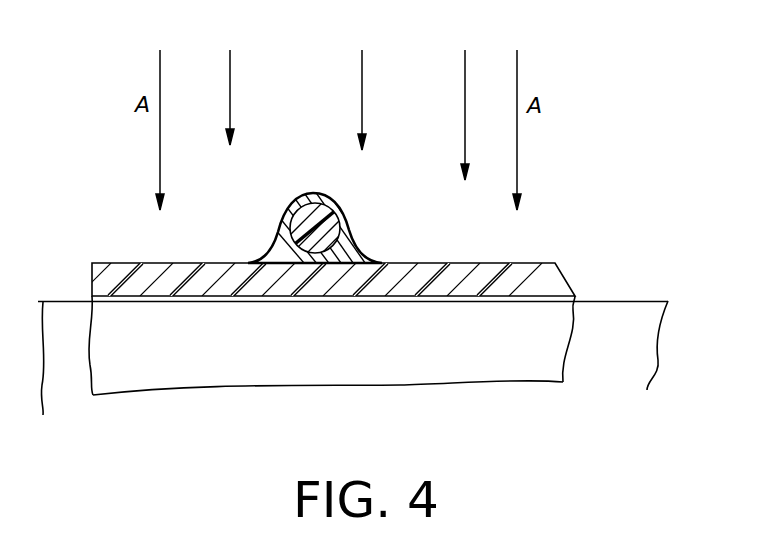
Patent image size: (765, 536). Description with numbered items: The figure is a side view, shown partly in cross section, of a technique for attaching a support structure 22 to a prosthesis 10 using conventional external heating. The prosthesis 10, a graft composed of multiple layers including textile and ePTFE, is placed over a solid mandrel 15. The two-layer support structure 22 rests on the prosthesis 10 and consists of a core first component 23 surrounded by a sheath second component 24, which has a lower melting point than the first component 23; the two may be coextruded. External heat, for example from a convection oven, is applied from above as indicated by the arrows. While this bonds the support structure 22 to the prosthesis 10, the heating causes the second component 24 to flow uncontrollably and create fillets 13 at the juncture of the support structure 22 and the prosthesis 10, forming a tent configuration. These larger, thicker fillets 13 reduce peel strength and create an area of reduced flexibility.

The prosthesis 10 is at (450, 353).
The fillets 13 is at (255, 262).
The solid mandrel 15 is at (617, 315).
The support structure 22 is at (338, 202).
The first component 23 is at (310, 197).
The second component 24 is at (282, 243).